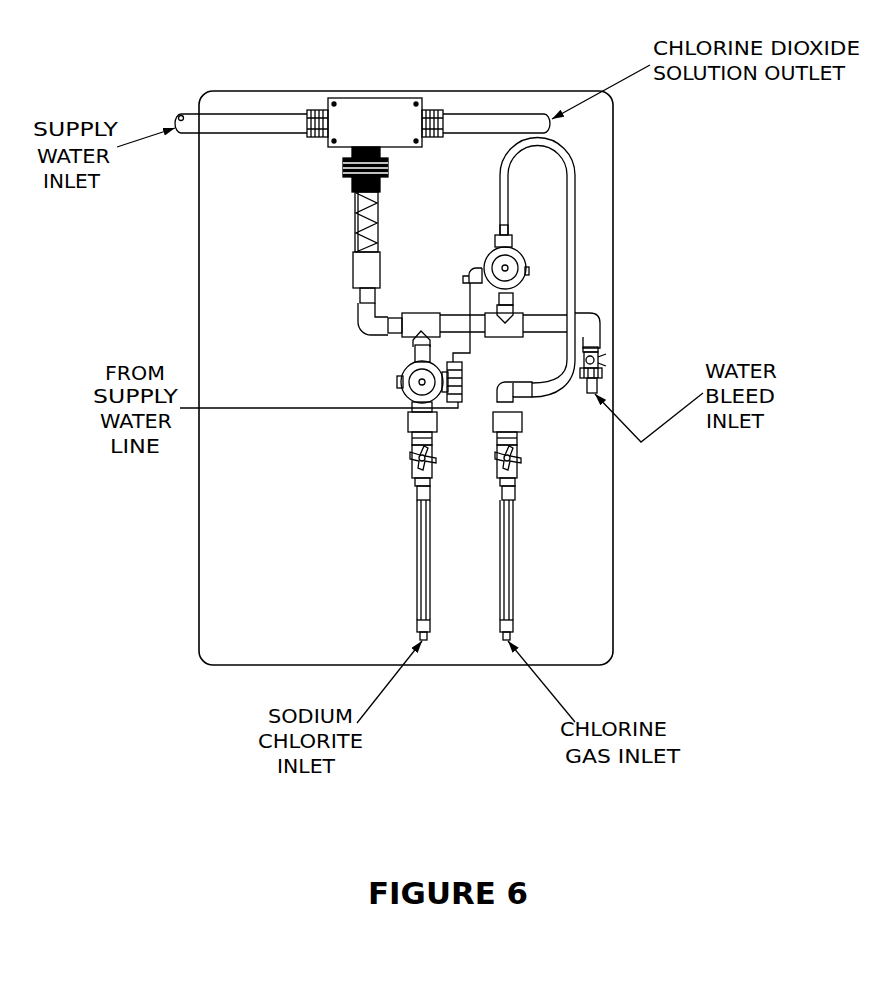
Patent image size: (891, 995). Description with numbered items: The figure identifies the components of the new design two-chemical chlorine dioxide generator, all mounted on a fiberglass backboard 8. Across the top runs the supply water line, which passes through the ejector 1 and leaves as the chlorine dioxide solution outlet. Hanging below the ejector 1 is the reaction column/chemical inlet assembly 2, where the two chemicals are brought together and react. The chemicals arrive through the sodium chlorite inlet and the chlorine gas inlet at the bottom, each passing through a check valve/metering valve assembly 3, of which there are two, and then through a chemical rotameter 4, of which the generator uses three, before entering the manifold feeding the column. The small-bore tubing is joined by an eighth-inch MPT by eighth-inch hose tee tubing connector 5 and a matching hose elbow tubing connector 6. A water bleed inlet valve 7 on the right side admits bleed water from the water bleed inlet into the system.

The ejector 1 is at (380, 113).
The reaction column/chemical inlet assembly 2 is at (347, 247).
The check valve/metering valve assembly 3 is at (406, 394).
The chemical rotameter 4 is at (406, 526).
The MPT x hose tee tubing connector 5 is at (468, 360).
The MPT x hose elbow tubing connector 6 is at (535, 378).
The water bleed inlet valve 7 is at (582, 370).
The fiberglass backboard 8 is at (406, 378).